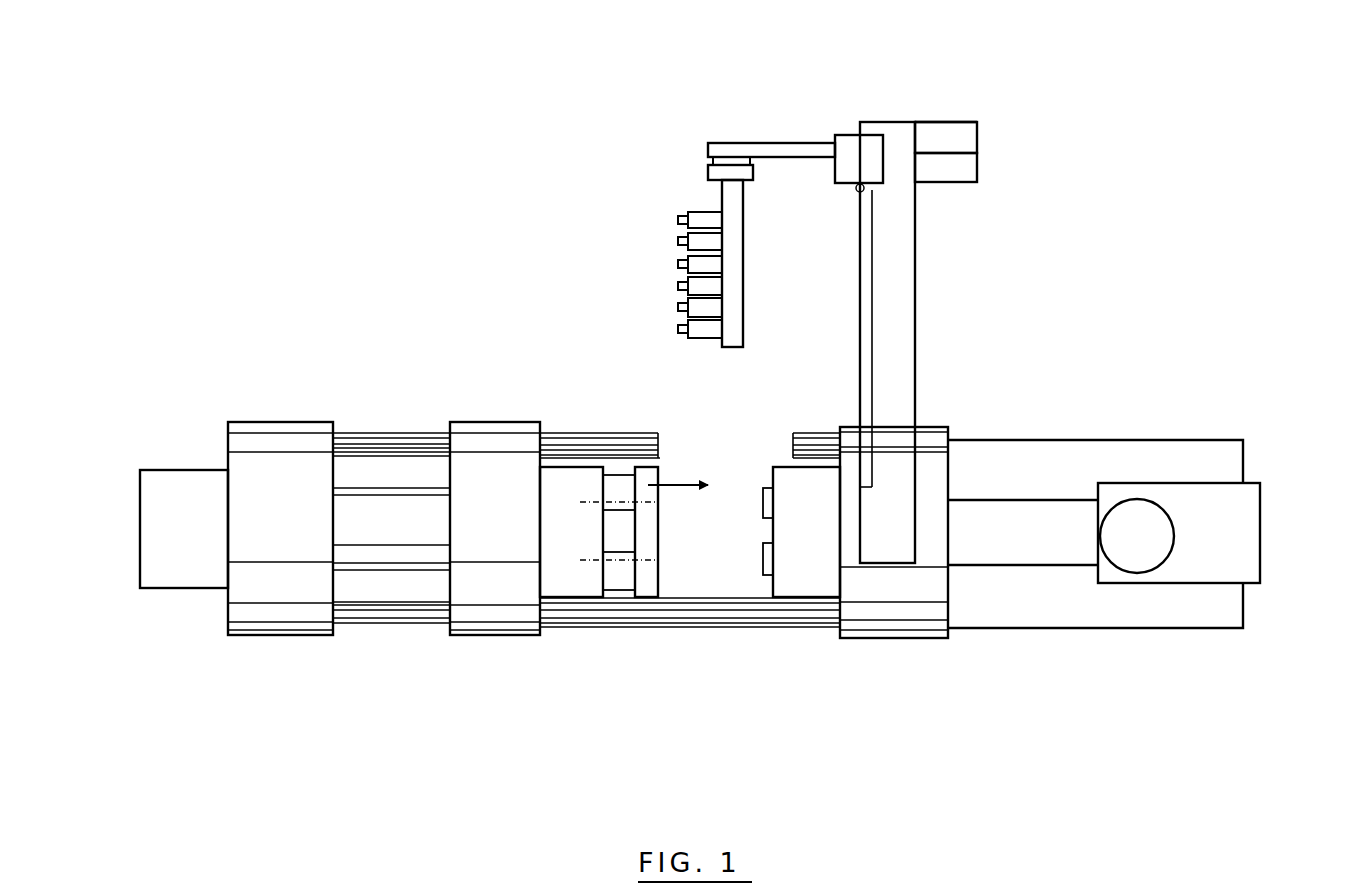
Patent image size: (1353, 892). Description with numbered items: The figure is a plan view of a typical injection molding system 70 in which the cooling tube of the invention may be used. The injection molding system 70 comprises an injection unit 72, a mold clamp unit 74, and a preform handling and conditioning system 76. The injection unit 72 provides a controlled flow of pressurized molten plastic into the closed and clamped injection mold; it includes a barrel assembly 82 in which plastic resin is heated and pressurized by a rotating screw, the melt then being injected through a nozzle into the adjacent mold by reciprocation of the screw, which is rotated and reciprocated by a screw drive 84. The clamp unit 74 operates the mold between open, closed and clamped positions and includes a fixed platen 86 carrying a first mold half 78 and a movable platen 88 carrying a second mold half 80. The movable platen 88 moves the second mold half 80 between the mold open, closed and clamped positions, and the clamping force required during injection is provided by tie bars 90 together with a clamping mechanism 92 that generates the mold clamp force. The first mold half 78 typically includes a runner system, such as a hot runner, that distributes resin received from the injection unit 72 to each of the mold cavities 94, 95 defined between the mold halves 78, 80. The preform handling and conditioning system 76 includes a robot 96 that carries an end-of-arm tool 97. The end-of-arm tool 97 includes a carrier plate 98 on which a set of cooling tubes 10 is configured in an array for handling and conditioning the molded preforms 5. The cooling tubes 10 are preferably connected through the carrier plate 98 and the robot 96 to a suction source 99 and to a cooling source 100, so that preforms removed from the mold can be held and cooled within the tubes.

The molded preforms 5 is at (678, 240).
The cooling tubes 10 is at (698, 210).
The injection molding system 70 is at (459, 124).
The injection unit 72 is at (1040, 673).
The mold clamp unit 74 is at (370, 683).
The preform handling and conditioning system 76 is at (982, 302).
The first mold half 78 is at (793, 553).
The second mold half 80 is at (647, 588).
The barrel assembly 82 is at (1047, 497).
The screw drive 84 is at (1242, 530).
The fixed platen 86 is at (893, 615).
The movable platen 88 is at (497, 430).
The tie bars 90 is at (597, 433).
The clamping mechanism 92 is at (155, 520).
The mold cavity 94 is at (617, 500).
The mold cavity 95 is at (760, 500).
The robot 96 is at (848, 135).
The end-of-arm tool 97 is at (756, 225).
The carrier plate 98 is at (735, 288).
The suction source 99 is at (977, 143).
The cooling source 100 is at (950, 170).